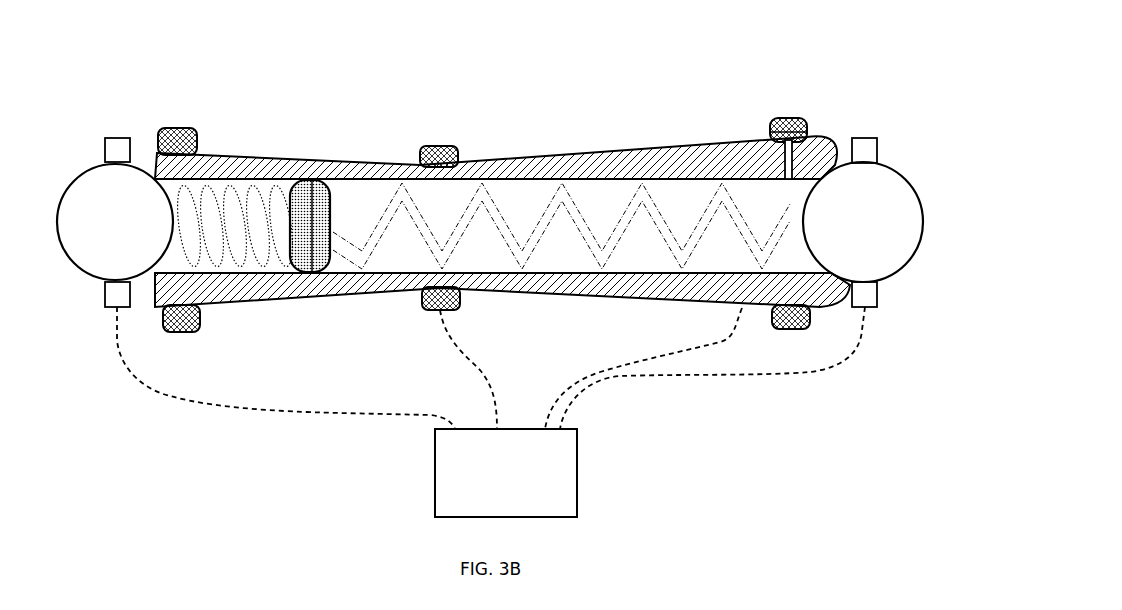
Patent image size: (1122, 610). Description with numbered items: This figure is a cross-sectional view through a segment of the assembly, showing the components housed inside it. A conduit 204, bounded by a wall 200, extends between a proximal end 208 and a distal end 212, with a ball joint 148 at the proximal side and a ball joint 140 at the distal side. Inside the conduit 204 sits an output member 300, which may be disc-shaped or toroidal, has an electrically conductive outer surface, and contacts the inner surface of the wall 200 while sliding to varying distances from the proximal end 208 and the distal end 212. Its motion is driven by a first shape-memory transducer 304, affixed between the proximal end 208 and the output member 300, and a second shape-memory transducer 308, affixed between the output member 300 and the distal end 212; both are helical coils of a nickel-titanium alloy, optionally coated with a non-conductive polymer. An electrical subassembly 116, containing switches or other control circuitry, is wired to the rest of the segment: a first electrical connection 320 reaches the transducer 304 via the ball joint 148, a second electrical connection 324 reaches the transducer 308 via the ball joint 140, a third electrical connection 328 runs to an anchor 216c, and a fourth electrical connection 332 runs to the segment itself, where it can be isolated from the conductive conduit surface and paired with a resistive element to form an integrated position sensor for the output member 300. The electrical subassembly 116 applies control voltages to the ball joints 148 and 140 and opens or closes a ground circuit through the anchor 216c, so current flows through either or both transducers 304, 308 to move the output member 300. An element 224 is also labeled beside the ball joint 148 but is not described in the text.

The electrical subassembly 116 is at (506, 473).
The ball joint 140 is at (905, 285).
The ball joint 148 is at (86, 262).
The wall 200 is at (573, 162).
The conduit 204 is at (560, 258).
The proximal end 208 is at (147, 155).
The distal end 212 is at (833, 135).
The anchor 216c is at (420, 305).
The connector 224 is at (107, 310).
The output member 300 is at (318, 188).
The first shape-memory transducer 304 is at (240, 190).
The second shape-memory transducer 308 is at (488, 195).
The first electrical connection 320 is at (170, 397).
The second electrical connection 324 is at (718, 378).
The third electrical connection 328 is at (490, 383).
The fourth electrical connection 332 is at (723, 340).